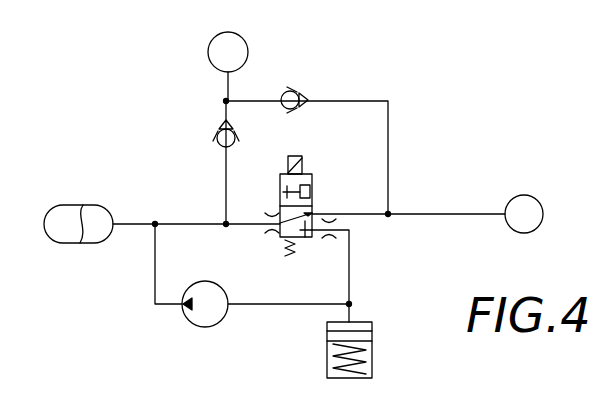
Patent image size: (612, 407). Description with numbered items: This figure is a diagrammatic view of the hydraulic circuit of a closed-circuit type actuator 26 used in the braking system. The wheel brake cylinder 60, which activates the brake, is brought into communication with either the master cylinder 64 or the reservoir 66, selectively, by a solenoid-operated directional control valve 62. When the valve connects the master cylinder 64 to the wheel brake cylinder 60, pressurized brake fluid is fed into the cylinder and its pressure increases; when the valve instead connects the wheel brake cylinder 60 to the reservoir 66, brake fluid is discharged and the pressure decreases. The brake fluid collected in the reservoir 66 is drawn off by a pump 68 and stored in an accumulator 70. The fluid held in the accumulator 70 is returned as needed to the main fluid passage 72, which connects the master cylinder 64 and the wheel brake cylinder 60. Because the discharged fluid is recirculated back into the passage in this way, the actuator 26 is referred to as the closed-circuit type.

The actuator 26 is at (434, 78).
The wheel brake cylinder 60 is at (523, 202).
The solenoid-operated directional control valve 62 is at (312, 190).
The master cylinder 64 is at (233, 50).
The reservoir 66 is at (372, 350).
The pump 68 is at (202, 320).
The accumulator 70 is at (91, 216).
The main fluid passage 72 is at (226, 188).